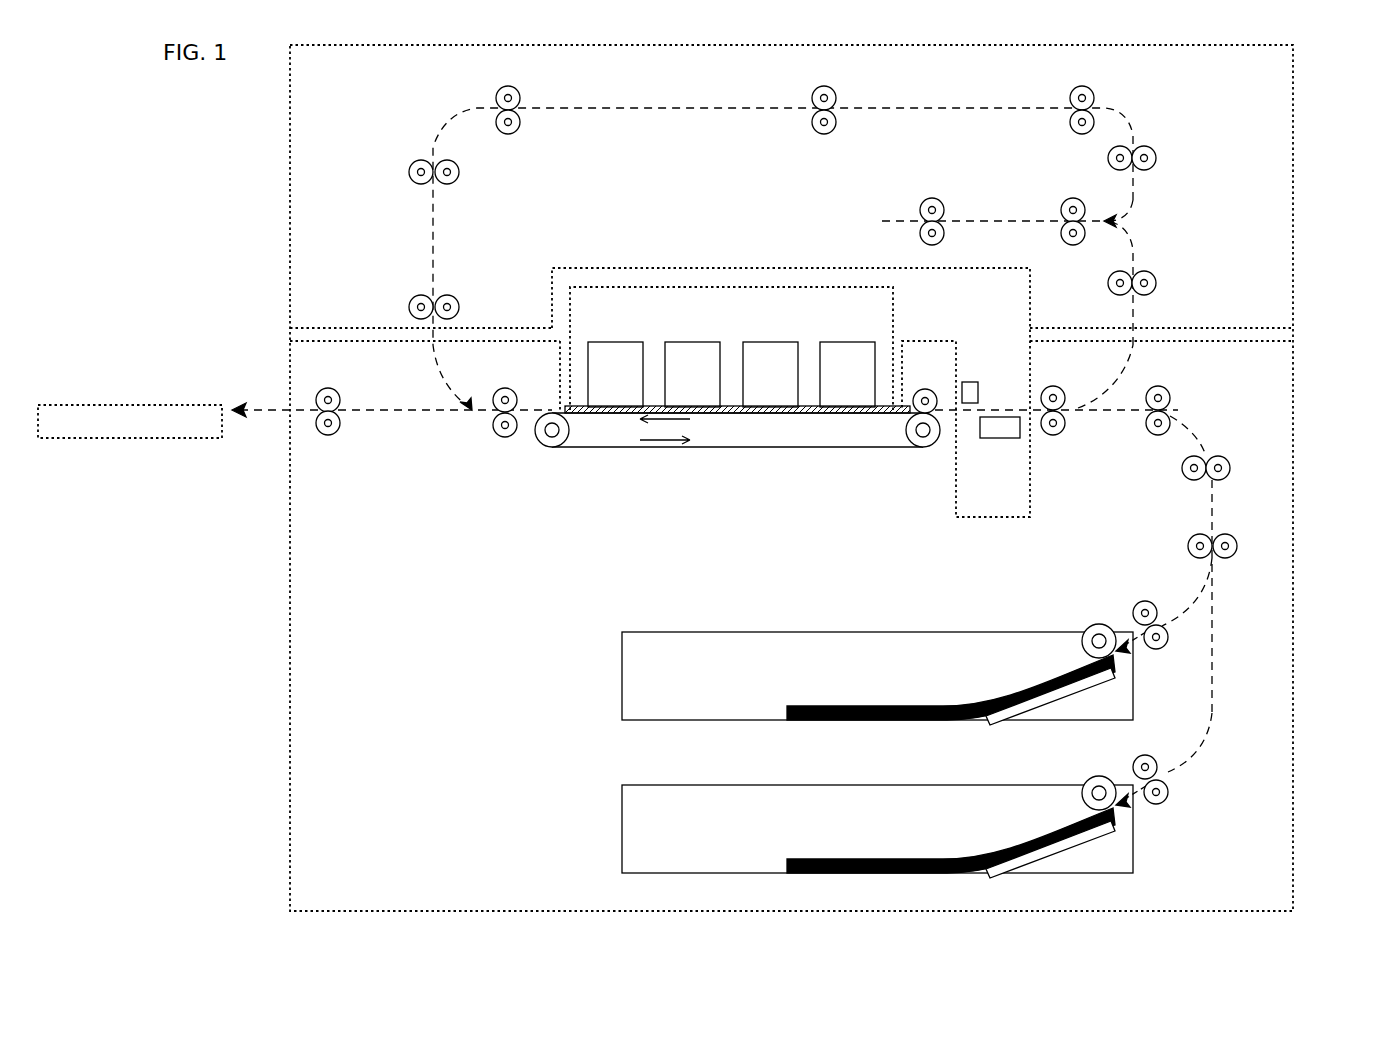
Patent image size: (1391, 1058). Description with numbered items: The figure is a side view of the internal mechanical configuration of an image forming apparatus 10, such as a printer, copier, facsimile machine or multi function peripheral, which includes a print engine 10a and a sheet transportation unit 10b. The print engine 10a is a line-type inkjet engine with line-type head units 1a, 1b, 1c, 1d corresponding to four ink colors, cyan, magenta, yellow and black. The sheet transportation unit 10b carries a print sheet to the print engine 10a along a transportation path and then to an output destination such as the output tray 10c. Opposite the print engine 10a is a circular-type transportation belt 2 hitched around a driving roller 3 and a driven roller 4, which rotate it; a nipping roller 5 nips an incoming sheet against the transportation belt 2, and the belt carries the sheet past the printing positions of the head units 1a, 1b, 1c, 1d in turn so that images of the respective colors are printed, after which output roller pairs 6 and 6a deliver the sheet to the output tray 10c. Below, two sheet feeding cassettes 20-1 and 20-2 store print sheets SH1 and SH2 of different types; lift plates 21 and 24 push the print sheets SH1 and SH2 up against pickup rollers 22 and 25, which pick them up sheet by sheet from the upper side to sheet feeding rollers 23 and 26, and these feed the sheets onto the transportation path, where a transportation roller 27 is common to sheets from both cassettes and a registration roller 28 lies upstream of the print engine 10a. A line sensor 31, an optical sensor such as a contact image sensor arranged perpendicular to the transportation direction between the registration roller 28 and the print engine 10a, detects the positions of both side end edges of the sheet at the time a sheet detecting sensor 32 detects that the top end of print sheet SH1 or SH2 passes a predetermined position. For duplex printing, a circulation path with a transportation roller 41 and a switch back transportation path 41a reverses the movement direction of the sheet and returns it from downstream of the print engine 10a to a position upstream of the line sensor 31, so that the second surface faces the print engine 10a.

The image forming apparatus 10 is at (1327, 100).
The print engine 10a is at (897, 313).
The sheet transportation unit 10b is at (1298, 380).
The output tray 10c is at (182, 403).
The line-type head unit 1a is at (852, 341).
The line-type head unit 1b is at (775, 341).
The line-type head unit 1c is at (697, 341).
The line-type head unit 1d is at (622, 341).
The transportation belt 2 is at (770, 450).
The driving roller 3 is at (543, 446).
The driven roller 4 is at (931, 441).
The nipping roller 5 is at (929, 390).
The output roller pair 6 is at (502, 388).
The output roller pair 6a is at (330, 388).
The sheet feeding cassette 20-1 is at (621, 672).
The sheet feeding cassette 20-2 is at (621, 825).
The lift plate 21 is at (1012, 706).
The pickup roller 22 is at (1088, 628).
The sheet feeding roller 23 is at (1134, 606).
The lift plate 24 is at (1012, 859).
The pickup roller 25 is at (1088, 784).
The sheet feeding roller 26 is at (1134, 762).
The transportation roller 27 is at (1162, 386).
The registration roller 28 is at (1057, 386).
The line sensor 31 is at (998, 440).
The sheet detecting sensor 32 is at (972, 381).
The transportation roller 41 is at (510, 86).
The switch back transportation path 41a is at (994, 220).
The print sheets SH1 is at (806, 706).
The print sheets SH2 is at (806, 859).